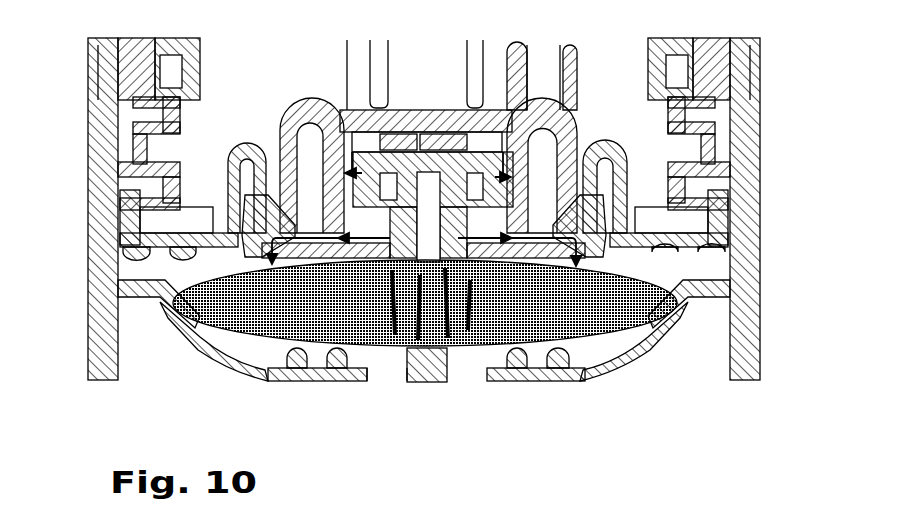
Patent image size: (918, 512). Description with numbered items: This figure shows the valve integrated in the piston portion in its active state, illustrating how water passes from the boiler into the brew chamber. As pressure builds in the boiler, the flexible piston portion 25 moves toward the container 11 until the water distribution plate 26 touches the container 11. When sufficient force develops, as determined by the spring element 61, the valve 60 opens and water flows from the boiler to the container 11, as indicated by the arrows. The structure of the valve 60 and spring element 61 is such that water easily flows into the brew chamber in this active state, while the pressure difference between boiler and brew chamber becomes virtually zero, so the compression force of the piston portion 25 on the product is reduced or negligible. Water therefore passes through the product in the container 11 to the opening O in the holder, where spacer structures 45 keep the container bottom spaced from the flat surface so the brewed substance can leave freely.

The piston portion 25 is at (232, 236).
The valve 60 is at (405, 150).
The spring element 61 is at (462, 130).
The container 11 is at (473, 343).
The water distribution plate 26 is at (320, 310).
The opening O is at (383, 367).
The spacer structures 45 is at (550, 367).